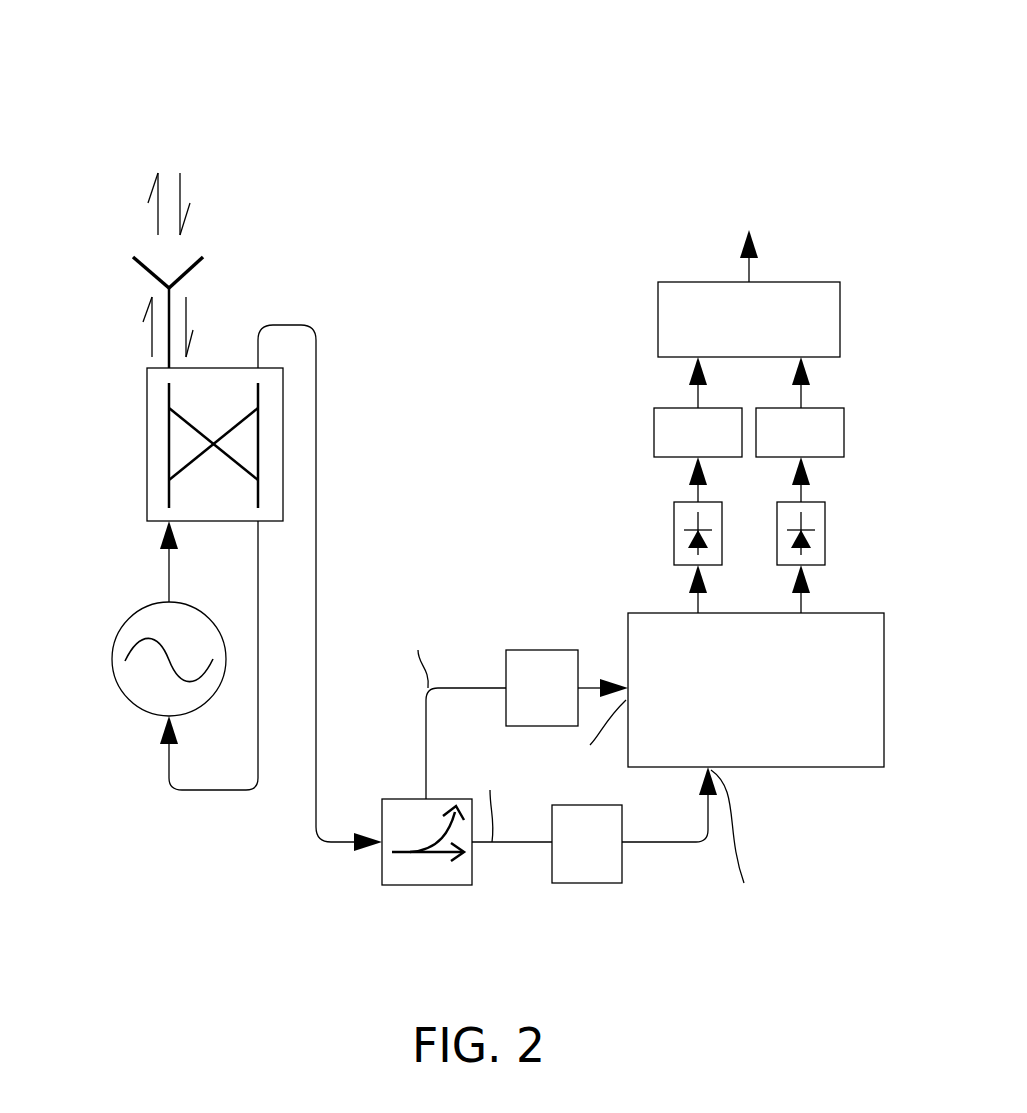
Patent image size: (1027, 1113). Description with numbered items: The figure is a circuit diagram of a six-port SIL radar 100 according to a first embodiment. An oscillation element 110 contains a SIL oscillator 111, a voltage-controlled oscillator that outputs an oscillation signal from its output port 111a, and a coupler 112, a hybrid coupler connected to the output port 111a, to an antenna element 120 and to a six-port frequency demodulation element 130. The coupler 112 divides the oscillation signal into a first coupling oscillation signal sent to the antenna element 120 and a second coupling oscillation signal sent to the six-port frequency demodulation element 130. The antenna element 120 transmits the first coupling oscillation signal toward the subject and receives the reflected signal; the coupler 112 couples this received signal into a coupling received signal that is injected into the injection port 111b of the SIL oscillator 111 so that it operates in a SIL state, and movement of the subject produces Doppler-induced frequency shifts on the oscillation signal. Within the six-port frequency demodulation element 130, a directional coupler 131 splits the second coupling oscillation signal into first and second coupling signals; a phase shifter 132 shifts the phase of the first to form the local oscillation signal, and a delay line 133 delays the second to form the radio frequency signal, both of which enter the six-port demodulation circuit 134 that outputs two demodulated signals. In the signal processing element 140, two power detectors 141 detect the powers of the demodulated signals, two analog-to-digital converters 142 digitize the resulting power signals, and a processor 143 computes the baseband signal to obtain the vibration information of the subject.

The six-port SIL radar 100 is at (155, 78).
The oscillation element 110 is at (385, 512).
The SIL oscillator 111 is at (112, 659).
The output port 111a is at (150, 604).
The injection port 111b is at (160, 720).
The coupler 112 is at (147, 456).
The antenna element 120 is at (143, 268).
The six-port frequency demodulation element 130 is at (400, 930).
The coupler 131 is at (405, 799).
The phase shifter 132 is at (540, 650).
The delay line 133 is at (590, 883).
The six-port demodulation circuit 134 is at (804, 767).
The signal processing element 140 is at (525, 345).
The power detector 141 is at (674, 535).
The analog-to-digital converter 142 is at (654, 435).
The processor 143 is at (658, 320).